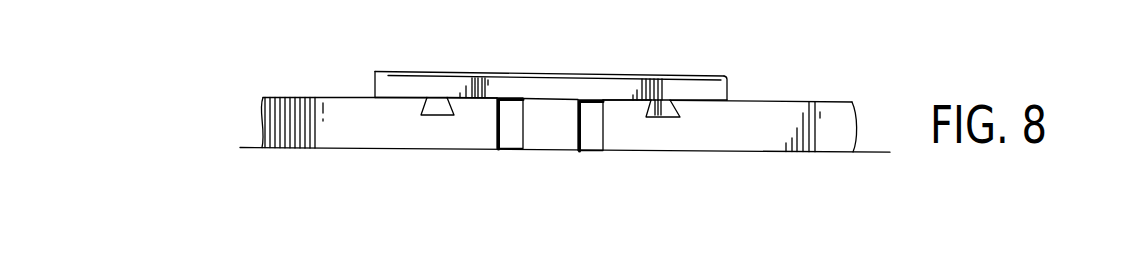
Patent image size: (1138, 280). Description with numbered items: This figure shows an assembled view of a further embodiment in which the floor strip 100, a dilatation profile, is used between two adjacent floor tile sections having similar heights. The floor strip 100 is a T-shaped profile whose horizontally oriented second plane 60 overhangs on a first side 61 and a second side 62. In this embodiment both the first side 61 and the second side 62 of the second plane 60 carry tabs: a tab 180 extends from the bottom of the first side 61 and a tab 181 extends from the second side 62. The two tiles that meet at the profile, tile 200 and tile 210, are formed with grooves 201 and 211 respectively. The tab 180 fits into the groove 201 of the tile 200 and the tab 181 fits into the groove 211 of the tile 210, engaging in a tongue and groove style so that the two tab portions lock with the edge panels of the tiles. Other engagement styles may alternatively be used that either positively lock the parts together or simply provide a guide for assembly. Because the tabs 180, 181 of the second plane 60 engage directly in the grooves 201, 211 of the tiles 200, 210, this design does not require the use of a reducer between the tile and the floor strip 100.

The floor strip 100 is at (790, 39).
The second plane 60 is at (487, 72).
The first side 61 is at (388, 82).
The second side 62 is at (703, 90).
The tab 180 is at (439, 107).
The tab 181 is at (657, 108).
The tile 200 is at (285, 148).
The groove 201 is at (422, 108).
The tile 210 is at (816, 143).
The groove 211 is at (673, 104).